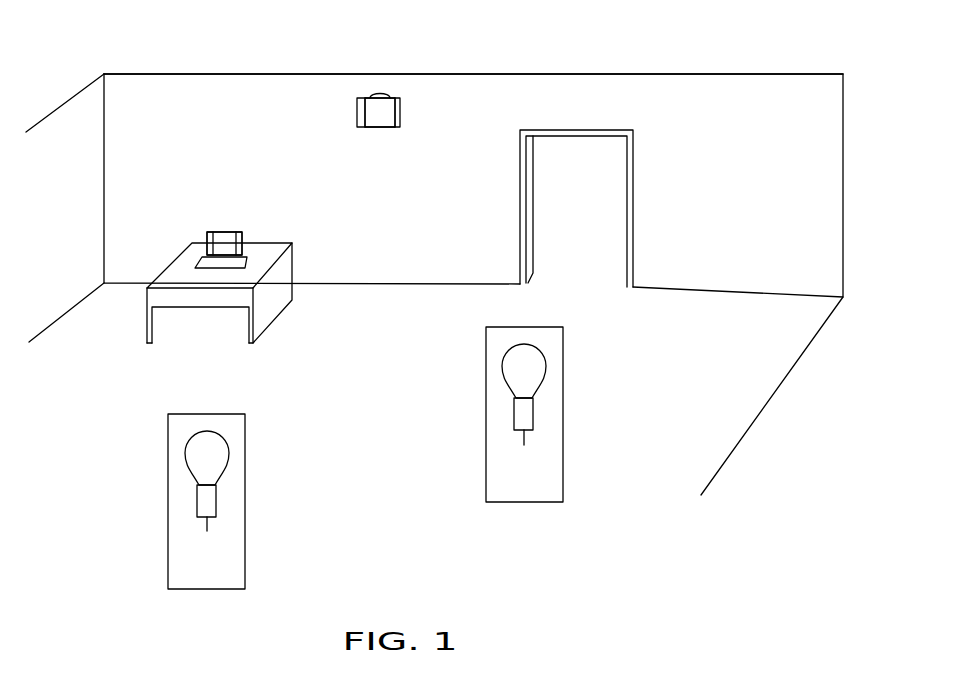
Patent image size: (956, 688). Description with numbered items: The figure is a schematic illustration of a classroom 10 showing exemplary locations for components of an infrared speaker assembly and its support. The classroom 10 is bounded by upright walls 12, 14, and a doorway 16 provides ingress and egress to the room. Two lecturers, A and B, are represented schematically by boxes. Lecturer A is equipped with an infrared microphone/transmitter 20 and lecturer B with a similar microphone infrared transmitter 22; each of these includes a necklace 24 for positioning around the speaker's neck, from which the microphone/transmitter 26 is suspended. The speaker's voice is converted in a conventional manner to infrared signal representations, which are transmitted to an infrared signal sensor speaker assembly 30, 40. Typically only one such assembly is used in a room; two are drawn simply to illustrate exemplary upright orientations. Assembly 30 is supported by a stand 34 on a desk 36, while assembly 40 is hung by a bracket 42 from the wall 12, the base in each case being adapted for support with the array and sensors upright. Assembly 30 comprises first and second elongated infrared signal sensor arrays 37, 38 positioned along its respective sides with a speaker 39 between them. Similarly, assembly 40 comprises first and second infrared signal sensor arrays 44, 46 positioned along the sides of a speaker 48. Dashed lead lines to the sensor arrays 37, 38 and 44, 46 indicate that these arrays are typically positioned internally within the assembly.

The classroom 10 is at (822, 131).
The wall 12 is at (204, 90).
The wall 14 is at (62, 122).
The doorway 16 is at (585, 163).
The infrared microphone/transmitter 20 is at (230, 494).
The microphone infrared transmitter 22 is at (548, 406).
The necklace 24 is at (192, 458).
The microphone/transmitter 26 is at (196, 503).
The infrared signal sensor speaker assembly 30 is at (221, 224).
The stand 34 is at (194, 253).
The desk 36 is at (288, 291).
The first elongated infrared signal sensor array 37 is at (207, 232).
The second elongated infrared signal sensor array 38 is at (240, 232).
The speaker 39 is at (230, 240).
The infrared signal sensor speaker assembly 40 is at (350, 113).
The bracket 42 is at (391, 85).
The first infrared signal sensor array 44 is at (360, 128).
The second infrared signal sensor array 46 is at (396, 128).
The speaker 48 is at (382, 110).